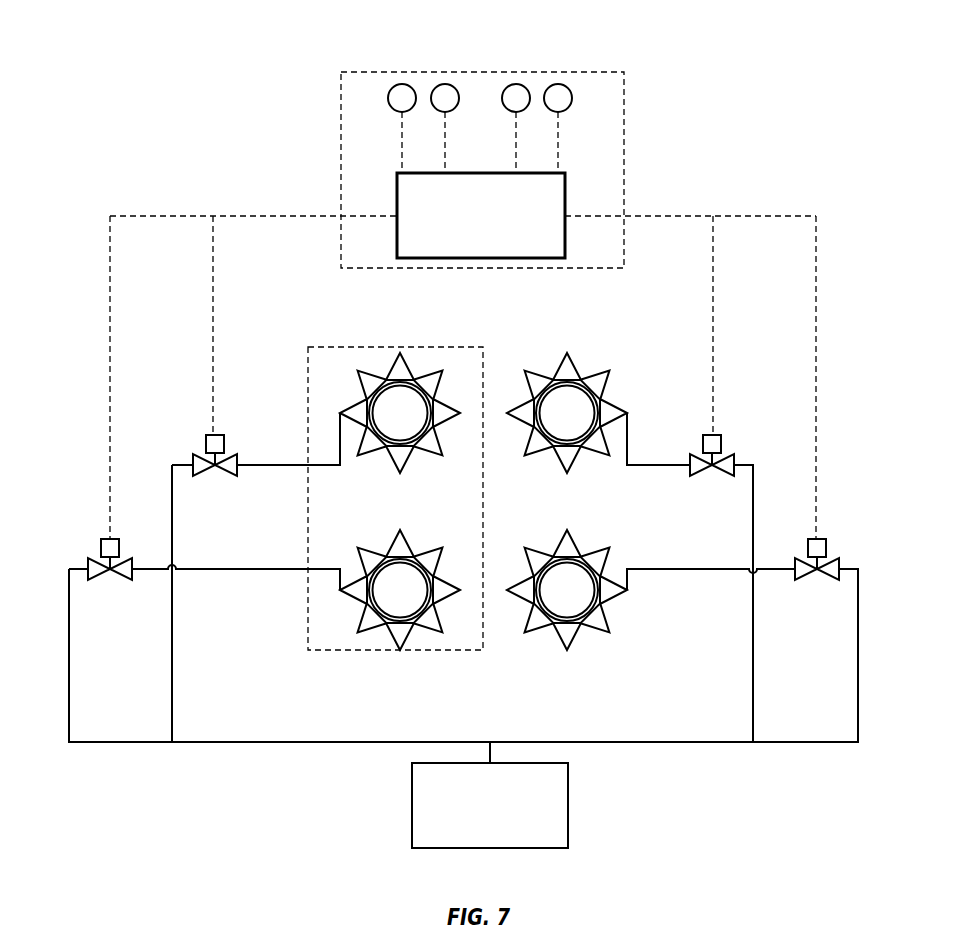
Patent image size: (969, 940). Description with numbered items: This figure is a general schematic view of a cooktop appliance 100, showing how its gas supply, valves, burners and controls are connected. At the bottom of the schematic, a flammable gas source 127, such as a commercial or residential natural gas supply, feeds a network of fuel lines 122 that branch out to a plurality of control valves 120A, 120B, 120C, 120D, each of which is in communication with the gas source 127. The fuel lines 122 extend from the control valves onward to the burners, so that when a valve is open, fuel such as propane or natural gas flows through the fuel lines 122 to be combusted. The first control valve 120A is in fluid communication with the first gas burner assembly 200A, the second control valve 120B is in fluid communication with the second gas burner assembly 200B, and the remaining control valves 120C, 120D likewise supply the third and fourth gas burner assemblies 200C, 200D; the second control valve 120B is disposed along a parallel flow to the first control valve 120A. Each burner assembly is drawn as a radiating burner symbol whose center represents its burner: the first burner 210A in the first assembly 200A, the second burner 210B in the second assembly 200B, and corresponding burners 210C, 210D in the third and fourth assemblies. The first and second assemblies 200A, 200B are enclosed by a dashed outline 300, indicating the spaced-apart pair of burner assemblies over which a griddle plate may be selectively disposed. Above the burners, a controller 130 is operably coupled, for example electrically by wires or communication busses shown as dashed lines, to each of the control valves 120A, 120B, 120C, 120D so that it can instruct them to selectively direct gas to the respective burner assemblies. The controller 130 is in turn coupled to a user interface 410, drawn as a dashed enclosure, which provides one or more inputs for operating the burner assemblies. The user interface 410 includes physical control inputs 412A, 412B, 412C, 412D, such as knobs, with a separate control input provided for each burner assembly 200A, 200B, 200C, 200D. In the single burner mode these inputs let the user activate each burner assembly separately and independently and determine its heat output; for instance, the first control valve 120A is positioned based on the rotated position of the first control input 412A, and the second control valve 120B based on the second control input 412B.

The cooktop appliance 100 is at (828, 191).
The fuel lines 122 is at (265, 742).
The flammable gas source 127 is at (505, 815).
The controller 130 is at (492, 225).
The user interface 410 is at (624, 110).
The first control input 412A is at (402, 84).
The second control input 412B is at (445, 84).
The control input 412C is at (516, 84).
The control input 412D is at (558, 84).
The first control valve 120A is at (228, 455).
The second control valve 120B is at (126, 558).
The control valve 120C is at (726, 455).
The control valve 120D is at (830, 558).
The zone / grouping 300 is at (311, 343).
The first gas burner assembly 200A is at (412, 386).
The second gas burner assembly 200B is at (410, 567).
The gas burner assembly 200C is at (567, 384).
The gas burner assembly 200D is at (585, 567).
The first burner 210A is at (398, 398).
The second burner 210B is at (398, 580).
The emitter core 210C is at (567, 403).
The emitter core 210D is at (567, 580).